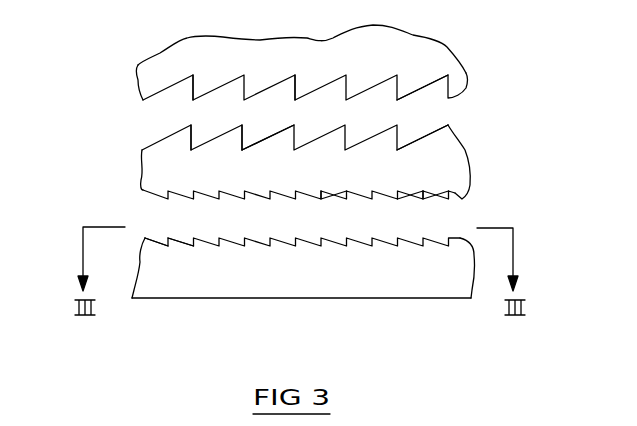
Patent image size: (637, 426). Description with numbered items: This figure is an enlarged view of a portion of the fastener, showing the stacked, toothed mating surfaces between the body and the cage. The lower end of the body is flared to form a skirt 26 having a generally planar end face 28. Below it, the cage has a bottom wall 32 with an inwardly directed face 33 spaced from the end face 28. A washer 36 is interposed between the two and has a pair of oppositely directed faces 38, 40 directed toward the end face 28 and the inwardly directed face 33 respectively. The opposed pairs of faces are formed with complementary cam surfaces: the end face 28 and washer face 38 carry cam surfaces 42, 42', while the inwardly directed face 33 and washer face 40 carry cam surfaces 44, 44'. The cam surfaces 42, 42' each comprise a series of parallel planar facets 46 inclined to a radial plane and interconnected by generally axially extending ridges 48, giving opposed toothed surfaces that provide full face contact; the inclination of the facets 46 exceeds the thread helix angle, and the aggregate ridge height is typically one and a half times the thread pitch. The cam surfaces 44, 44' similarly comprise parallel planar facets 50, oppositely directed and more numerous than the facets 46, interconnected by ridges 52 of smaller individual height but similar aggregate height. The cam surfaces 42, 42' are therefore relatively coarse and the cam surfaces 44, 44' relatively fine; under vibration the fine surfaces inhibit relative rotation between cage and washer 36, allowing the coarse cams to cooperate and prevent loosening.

The skirt 26 is at (117, 77).
The end face 28 is at (219, 48).
The bottom wall 32 is at (232, 289).
The inwardly directed face 33 is at (281, 241).
The washer 36 is at (152, 162).
The face 38 is at (284, 131).
The face 40 is at (333, 191).
The cam surface 42 is at (453, 95).
The cam surface 42' is at (456, 134).
The cam surface 44 is at (490, 170).
The cam surface 44' is at (441, 290).
The planar facets 46 is at (258, 91).
The ridge 48 is at (299, 91).
The planar facets 50 is at (443, 194).
The ridges 52 is at (428, 199).